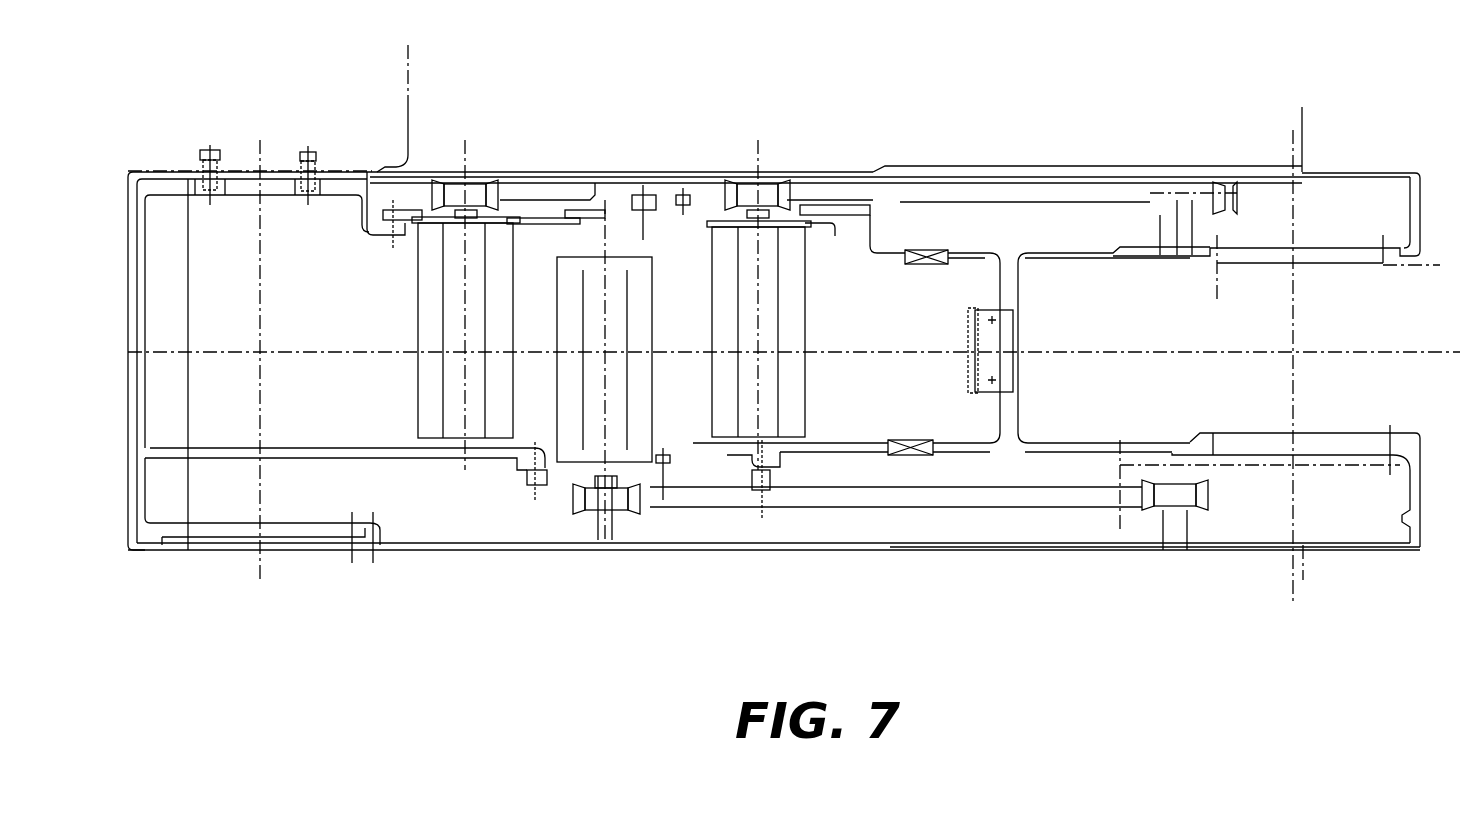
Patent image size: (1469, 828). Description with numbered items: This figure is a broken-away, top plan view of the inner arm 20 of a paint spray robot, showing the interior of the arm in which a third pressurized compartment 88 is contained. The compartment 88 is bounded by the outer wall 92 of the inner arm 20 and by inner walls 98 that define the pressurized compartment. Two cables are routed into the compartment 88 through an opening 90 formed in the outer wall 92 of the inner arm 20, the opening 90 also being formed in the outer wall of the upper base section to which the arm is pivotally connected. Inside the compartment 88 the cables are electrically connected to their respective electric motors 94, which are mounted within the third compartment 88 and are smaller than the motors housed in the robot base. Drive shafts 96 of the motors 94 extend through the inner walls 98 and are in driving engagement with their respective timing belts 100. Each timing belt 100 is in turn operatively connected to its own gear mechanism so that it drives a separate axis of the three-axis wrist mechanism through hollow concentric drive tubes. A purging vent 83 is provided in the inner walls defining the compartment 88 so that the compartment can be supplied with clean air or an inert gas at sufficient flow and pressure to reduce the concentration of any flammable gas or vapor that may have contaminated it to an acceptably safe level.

The inner arm 20 is at (718, 550).
The purging vent 83 is at (928, 250).
The third pressurized compartment 88 is at (305, 448).
The opening 90 is at (232, 182).
The outer wall 92 is at (152, 170).
The electric motors 94 is at (420, 272).
The drive shafts 96 is at (476, 178).
The inner walls 98 is at (830, 222).
The timing belts 100 is at (552, 192).